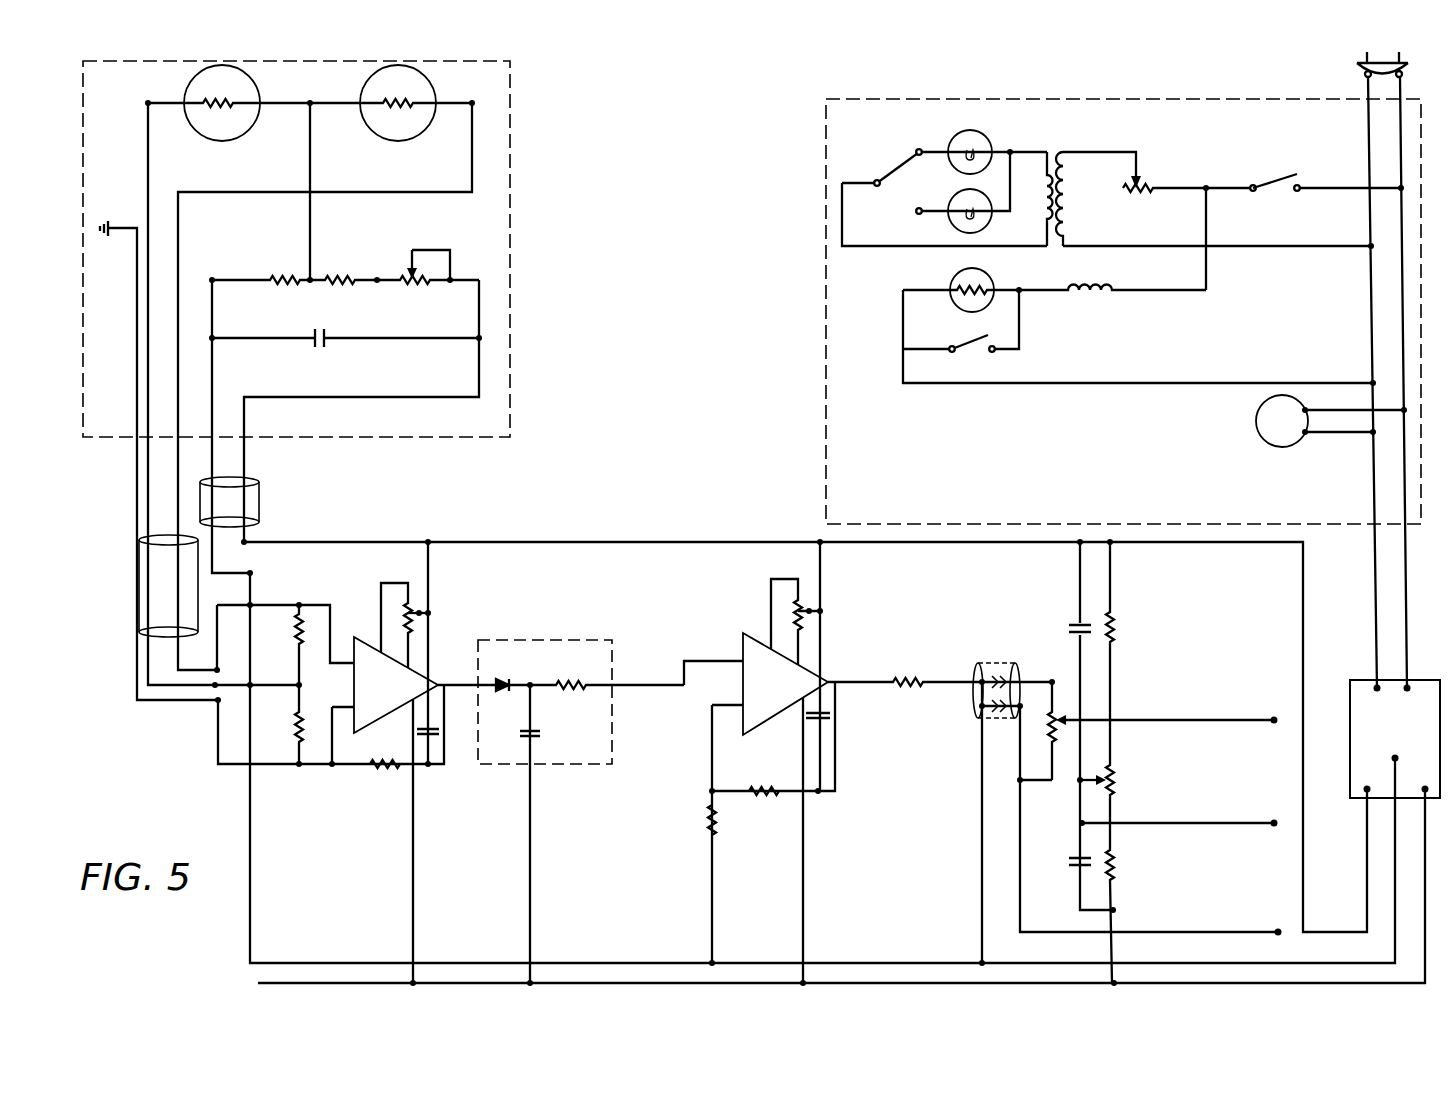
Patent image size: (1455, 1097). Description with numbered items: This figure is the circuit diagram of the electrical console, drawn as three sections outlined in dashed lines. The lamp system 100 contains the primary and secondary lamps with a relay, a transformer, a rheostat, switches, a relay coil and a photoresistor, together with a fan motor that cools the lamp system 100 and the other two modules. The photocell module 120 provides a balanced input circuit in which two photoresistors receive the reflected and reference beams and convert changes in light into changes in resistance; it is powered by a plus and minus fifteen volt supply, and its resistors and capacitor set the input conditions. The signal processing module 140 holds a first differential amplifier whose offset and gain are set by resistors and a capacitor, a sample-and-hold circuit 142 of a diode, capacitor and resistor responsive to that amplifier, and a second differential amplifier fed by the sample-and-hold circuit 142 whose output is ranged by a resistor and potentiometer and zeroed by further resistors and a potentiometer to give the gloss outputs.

The lamp system 100 is at (822, 199).
The photocell module 120 is at (512, 218).
The signal processing module 140 is at (707, 528).
The sample-and-hold circuit 142 is at (577, 640).